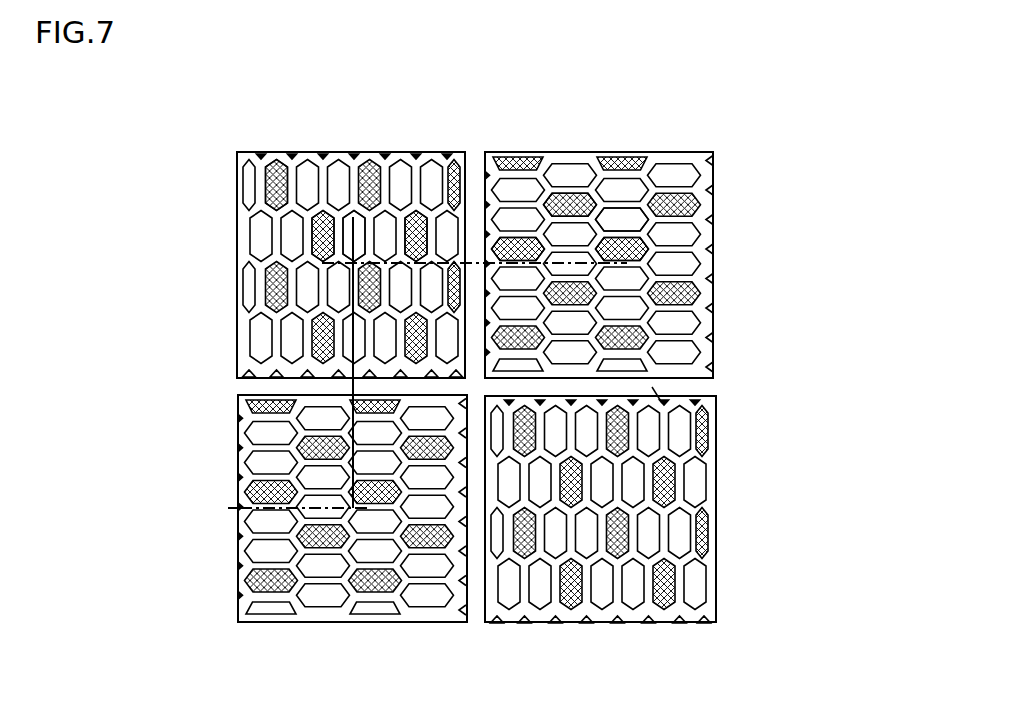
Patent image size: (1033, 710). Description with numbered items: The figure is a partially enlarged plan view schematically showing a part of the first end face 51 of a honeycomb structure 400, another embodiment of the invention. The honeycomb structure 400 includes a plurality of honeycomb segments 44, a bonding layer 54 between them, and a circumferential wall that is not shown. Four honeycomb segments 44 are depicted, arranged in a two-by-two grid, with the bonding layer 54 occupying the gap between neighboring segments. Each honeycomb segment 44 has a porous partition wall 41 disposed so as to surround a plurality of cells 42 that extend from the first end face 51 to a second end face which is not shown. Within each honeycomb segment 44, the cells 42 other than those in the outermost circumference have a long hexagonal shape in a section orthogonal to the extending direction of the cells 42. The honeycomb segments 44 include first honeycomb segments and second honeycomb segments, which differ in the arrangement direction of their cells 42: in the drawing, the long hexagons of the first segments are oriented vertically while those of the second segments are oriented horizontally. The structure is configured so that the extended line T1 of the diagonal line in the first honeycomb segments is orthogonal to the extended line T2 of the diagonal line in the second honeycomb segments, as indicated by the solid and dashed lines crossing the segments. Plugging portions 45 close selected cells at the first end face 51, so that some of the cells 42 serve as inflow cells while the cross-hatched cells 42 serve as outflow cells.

The honeycomb structure 400 is at (790, 46).
The first end face 51 is at (206, 124).
The plugging portion 45 is at (293, 163).
The partition wall 41 is at (318, 207).
The cell 42 is at (355, 237).
The honeycomb segment 44 is at (227, 268).
The extended line of diagonal line T1 is at (353, 322).
The extended line of diagonal line T2 is at (600, 302).
The bonding layer 54 is at (660, 403).